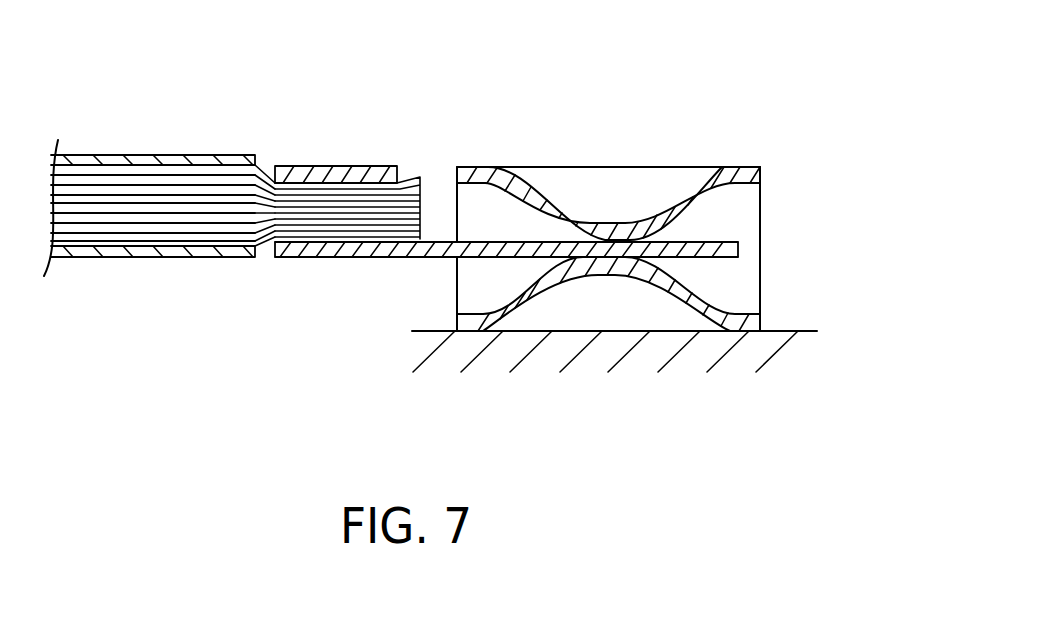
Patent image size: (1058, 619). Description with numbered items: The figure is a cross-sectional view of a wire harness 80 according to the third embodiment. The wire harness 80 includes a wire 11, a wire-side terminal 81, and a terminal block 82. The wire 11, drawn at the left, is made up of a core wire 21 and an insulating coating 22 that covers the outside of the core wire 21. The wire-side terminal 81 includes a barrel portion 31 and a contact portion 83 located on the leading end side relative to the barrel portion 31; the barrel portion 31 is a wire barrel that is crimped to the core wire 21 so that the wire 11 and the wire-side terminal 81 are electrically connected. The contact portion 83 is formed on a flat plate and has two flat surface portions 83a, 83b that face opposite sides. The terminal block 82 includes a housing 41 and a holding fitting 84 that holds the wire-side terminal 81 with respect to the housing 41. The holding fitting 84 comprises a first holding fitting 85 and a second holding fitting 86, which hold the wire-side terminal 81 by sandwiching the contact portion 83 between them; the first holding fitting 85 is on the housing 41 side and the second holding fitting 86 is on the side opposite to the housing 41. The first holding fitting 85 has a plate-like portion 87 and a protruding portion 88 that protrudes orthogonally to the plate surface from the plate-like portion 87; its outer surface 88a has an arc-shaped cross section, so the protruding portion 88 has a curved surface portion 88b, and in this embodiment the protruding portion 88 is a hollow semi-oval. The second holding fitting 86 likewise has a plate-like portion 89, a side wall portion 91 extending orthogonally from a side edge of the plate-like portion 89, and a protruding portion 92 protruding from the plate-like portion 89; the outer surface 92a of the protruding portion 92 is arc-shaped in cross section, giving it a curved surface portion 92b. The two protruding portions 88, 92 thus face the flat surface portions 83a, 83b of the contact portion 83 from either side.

The wire 11 is at (232, 202).
The insulating coating 22 is at (136, 162).
The core wire 21 is at (90, 233).
The wire-side terminal 81 is at (283, 165).
The barrel portion 31 is at (333, 166).
The wire harness 80 is at (542, 225).
The side wall portion 91 is at (747, 198).
The contact portion 83 is at (539, 223).
The flat surface portion 83a is at (467, 258).
The flat surface portion 83b is at (467, 240).
The holding fitting 84 is at (593, 266).
The second holding fitting 86 is at (601, 161).
The first holding fitting 85 is at (593, 340).
The plate-like portion 89 is at (467, 167).
The plate-like portion 87 is at (472, 334).
The protruding portion 92 is at (612, 224).
The outer surface 92a is at (674, 229).
The curved surface portion 92b is at (542, 229).
The protruding portion 88 is at (608, 268).
The outer surface 88a is at (546, 263).
The curved surface portion 88b is at (672, 263).
The terminal block 82 is at (803, 329).
The housing 41 is at (770, 357).